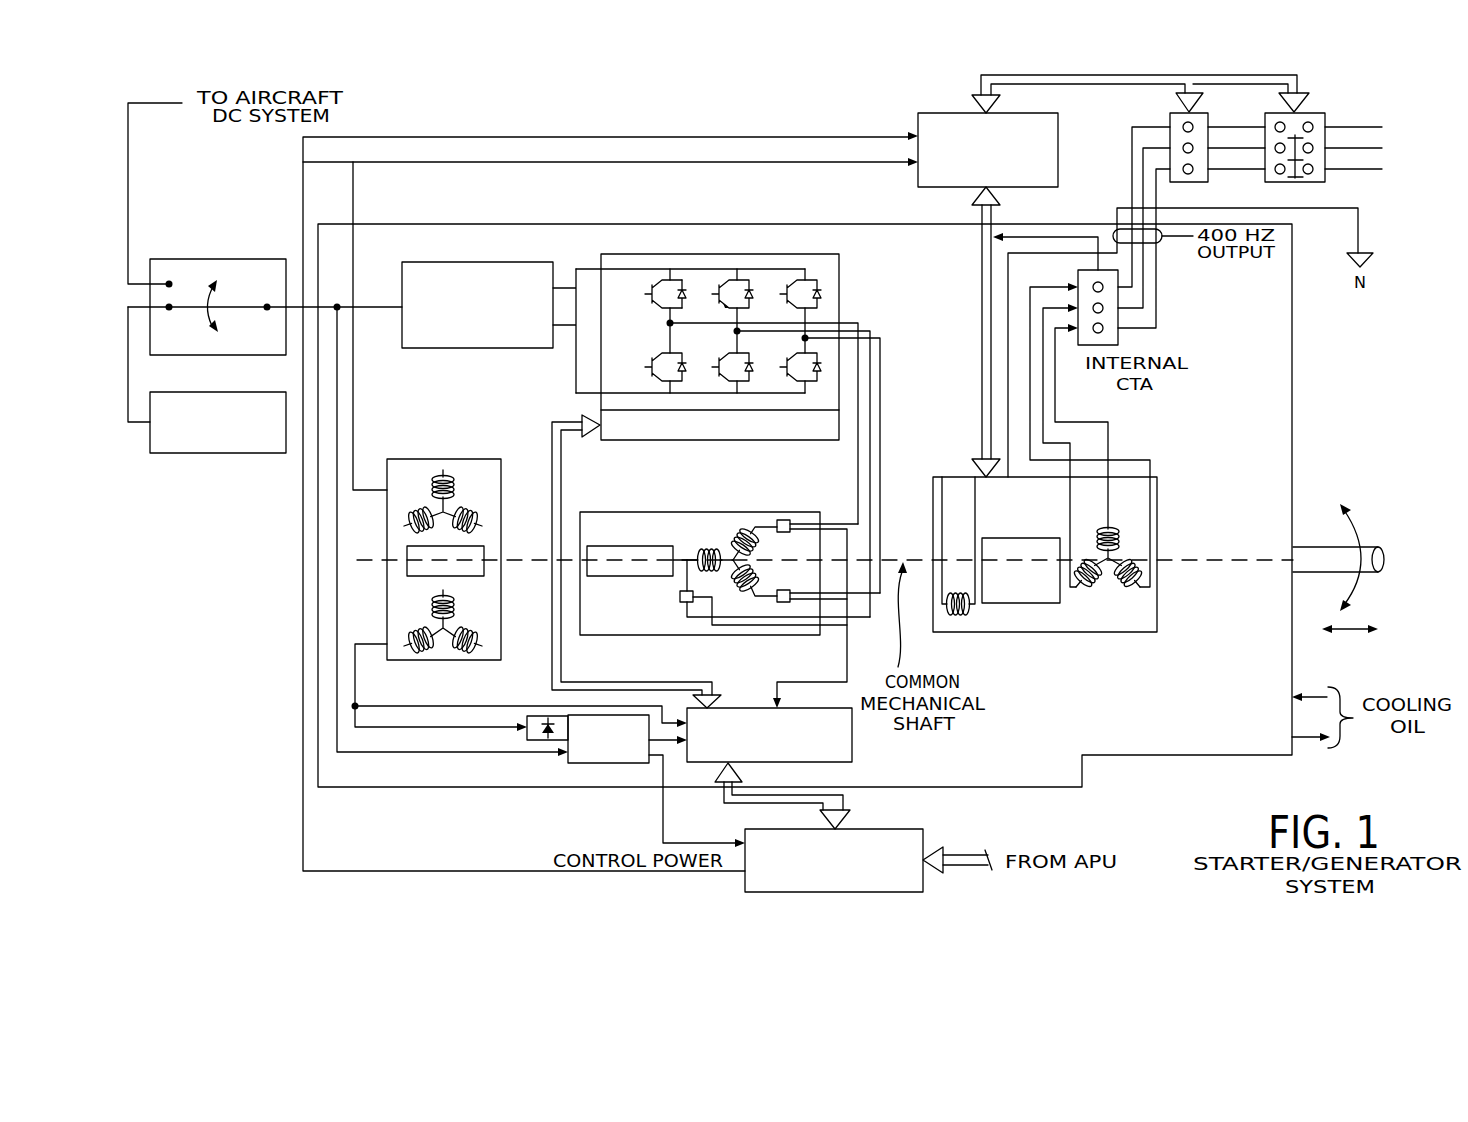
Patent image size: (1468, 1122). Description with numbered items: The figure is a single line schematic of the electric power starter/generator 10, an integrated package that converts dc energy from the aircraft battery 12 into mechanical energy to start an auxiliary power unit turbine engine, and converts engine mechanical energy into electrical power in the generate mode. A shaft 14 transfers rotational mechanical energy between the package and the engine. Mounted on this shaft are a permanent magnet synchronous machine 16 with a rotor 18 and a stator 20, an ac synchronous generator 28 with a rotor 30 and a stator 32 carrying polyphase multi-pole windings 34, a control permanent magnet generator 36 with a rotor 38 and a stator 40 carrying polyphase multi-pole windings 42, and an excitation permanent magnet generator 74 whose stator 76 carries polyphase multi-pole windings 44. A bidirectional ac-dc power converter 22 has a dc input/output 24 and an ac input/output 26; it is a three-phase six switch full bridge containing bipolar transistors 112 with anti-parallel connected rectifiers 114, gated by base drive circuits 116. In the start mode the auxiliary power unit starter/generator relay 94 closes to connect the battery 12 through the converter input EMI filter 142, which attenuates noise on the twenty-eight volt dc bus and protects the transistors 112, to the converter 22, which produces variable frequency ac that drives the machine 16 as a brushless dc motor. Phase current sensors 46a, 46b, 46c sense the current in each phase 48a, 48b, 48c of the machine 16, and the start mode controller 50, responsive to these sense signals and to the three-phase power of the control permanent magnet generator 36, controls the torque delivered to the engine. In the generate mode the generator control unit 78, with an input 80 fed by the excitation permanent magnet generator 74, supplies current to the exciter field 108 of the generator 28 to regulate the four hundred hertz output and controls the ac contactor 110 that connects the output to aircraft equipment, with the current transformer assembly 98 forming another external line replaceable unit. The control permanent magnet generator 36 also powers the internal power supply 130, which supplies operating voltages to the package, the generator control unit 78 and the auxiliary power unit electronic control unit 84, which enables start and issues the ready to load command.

The electric power starter/generator 10 is at (451, 815).
The aircraft battery 12 is at (228, 455).
The shaft 14 is at (1313, 547).
The permanent magnet synchronous machine 16 is at (821, 542).
The rotor 18 is at (630, 546).
The stator 20 is at (707, 552).
The bidirectional ac-dc power converter 22 is at (841, 270).
The dc input/output 24 is at (584, 297).
The ac input/output 26 is at (862, 300).
The ac synchronous generator 28 is at (1170, 510).
The rotor 30 is at (1035, 603).
The stator 32 is at (1170, 553).
The polyphase multi-pole windings 34 is at (1130, 590).
The control permanent magnet generator 36 is at (377, 583).
The rotor 38 is at (485, 572).
The stator 40 is at (462, 612).
The polyphase multi-pole windings 42 is at (476, 640).
The polyphase multi-pole windings 44 is at (478, 519).
The phase current sensor 46a is at (779, 520).
The phase current sensor 46b is at (682, 603).
The phase current sensor 46c is at (785, 603).
The phase 48a is at (861, 356).
The phase 48b is at (872, 401).
The phase 48c is at (882, 451).
The start mode controller 50 is at (853, 740).
The excitation permanent magnet generator 74 is at (427, 458).
The stator 76 is at (464, 498).
The generator control unit 78 is at (1062, 112).
The input 80 is at (908, 160).
The auxiliary power unit electronic control unit 84 is at (898, 829).
The auxiliary power unit starter/generator relay 94 is at (232, 258).
The current transformer assembly 98 is at (1204, 110).
The exciter field 108 is at (960, 616).
The ac contactor 110 is at (1321, 112).
The bipolar transistor 112 is at (646, 294).
The anti-parallel connected rectifier 114 is at (683, 292).
The base drive circuits 116 is at (628, 441).
The internal power supply 130 is at (615, 765).
The converter input EMI filter 142 is at (470, 262).